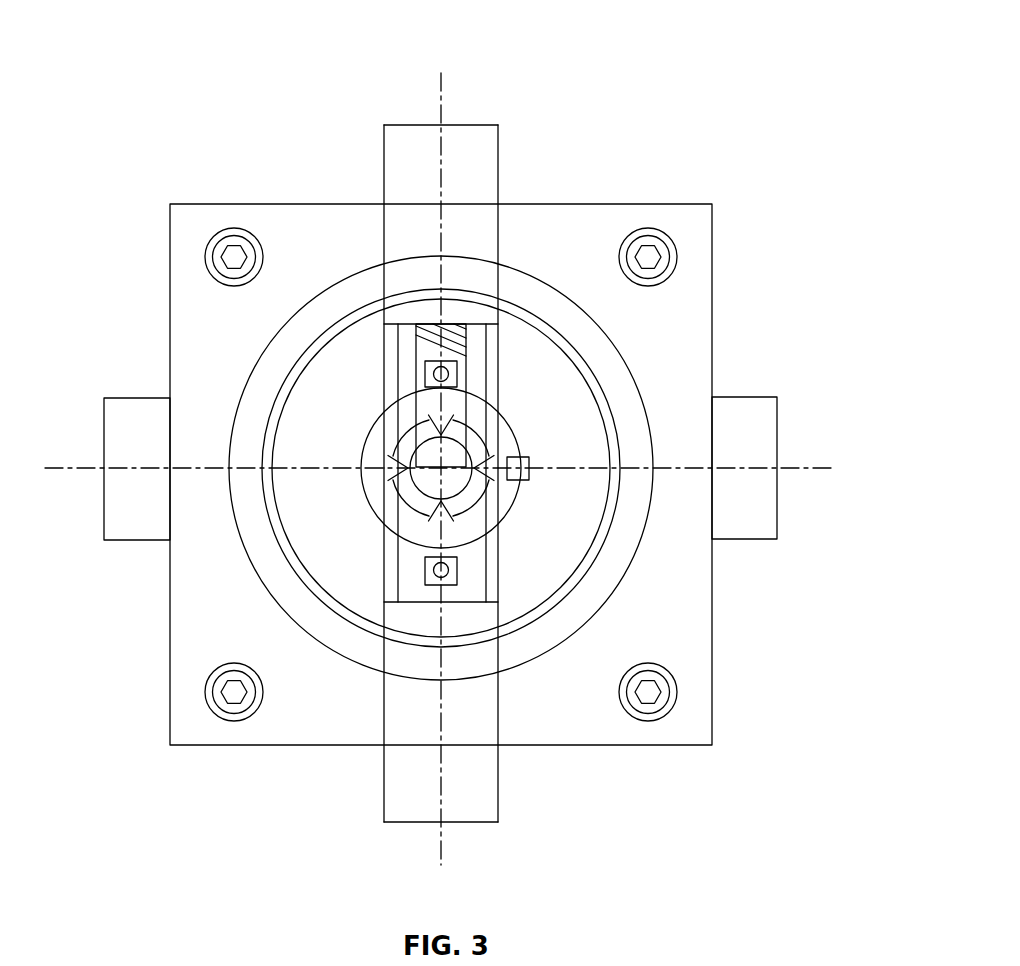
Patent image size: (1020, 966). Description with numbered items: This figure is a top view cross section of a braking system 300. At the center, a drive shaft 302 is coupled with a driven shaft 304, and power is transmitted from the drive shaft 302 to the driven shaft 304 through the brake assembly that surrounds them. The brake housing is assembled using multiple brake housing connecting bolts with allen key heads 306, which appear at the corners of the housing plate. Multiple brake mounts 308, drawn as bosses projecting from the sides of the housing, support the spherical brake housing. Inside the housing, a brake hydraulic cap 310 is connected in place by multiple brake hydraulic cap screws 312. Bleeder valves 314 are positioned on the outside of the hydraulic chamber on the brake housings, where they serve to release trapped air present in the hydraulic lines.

The braking system 300 is at (433, 437).
The drive shaft 302 is at (487, 797).
The driven shaft 304 is at (487, 162).
The brake housing connecting bolts with allen key heads 306 is at (235, 257).
The brake mounts 308 is at (117, 432).
The brake hydraulic cap 310 is at (372, 462).
The brake hydraulic cap screws 312 is at (428, 577).
The bleeder valves 314 is at (515, 465).